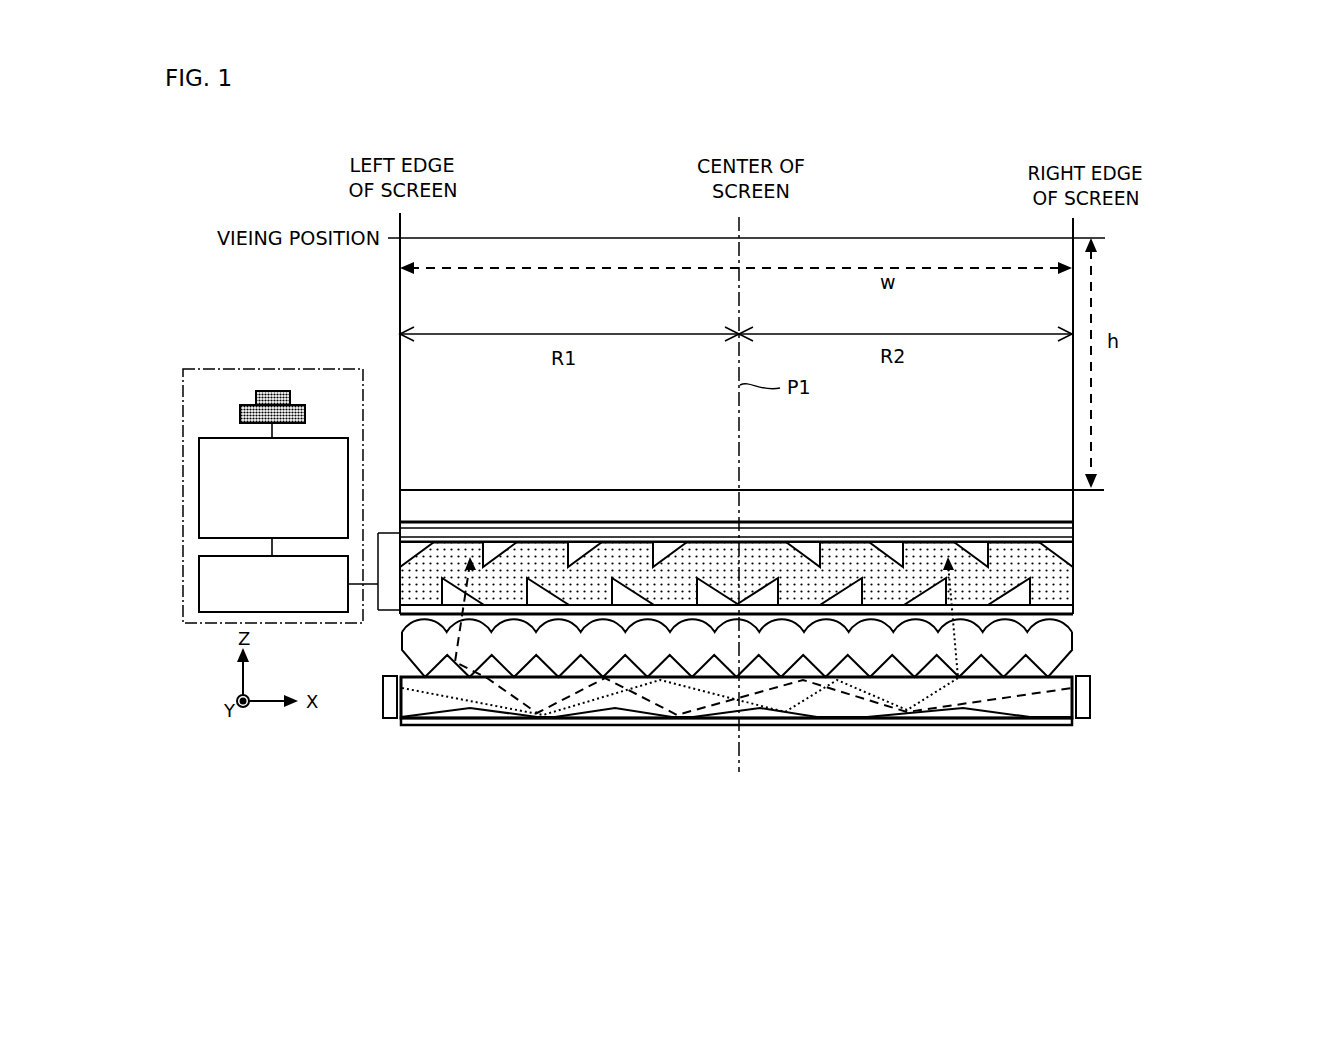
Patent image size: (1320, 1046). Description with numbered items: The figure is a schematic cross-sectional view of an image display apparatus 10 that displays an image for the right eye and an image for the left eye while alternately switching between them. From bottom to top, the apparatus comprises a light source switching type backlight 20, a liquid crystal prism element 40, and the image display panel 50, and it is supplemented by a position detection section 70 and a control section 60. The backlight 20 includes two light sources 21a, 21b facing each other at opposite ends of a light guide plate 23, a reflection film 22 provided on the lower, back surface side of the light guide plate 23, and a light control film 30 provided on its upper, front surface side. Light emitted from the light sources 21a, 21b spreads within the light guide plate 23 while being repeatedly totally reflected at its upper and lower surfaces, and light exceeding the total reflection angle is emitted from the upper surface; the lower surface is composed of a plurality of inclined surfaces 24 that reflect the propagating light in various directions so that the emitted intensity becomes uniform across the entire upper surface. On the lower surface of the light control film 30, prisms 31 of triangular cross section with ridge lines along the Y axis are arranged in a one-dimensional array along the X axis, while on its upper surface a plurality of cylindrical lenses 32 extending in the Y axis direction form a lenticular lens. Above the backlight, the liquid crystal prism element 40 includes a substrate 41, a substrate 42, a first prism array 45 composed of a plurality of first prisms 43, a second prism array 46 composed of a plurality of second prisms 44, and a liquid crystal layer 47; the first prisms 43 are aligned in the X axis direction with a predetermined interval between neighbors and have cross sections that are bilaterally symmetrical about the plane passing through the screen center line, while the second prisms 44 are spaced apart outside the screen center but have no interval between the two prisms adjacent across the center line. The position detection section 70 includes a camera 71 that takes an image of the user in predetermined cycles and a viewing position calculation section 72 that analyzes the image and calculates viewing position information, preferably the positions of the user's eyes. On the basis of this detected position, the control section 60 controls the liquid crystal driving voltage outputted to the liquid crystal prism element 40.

The image display apparatus 10 is at (1163, 233).
The light source switching type backlight 20 is at (815, 707).
The light source 21a is at (389, 720).
The light source 21b is at (1080, 719).
The reflection film 22 is at (902, 727).
The light guide plate 23 is at (1047, 712).
The inclined surfaces 24 is at (457, 710).
The light control film 30 is at (803, 651).
The prisms 31 is at (1050, 660).
The cylindrical lenses 32 is at (1070, 627).
The liquid crystal prism element 40 is at (840, 561).
The substrate 41 is at (1073, 507).
The substrate 42 is at (1073, 607).
The first prisms 43 is at (800, 547).
The second prisms 44 is at (821, 591).
The first prism array 45 is at (1062, 552).
The second prism array 46 is at (1048, 593).
The liquid crystal layer 47 is at (1075, 577).
The image display panel 50 is at (1104, 490).
The control section 60 is at (273, 584).
The position detection section 70 is at (292, 369).
The camera 71 is at (292, 405).
The viewing position calculation section 72 is at (273, 488).